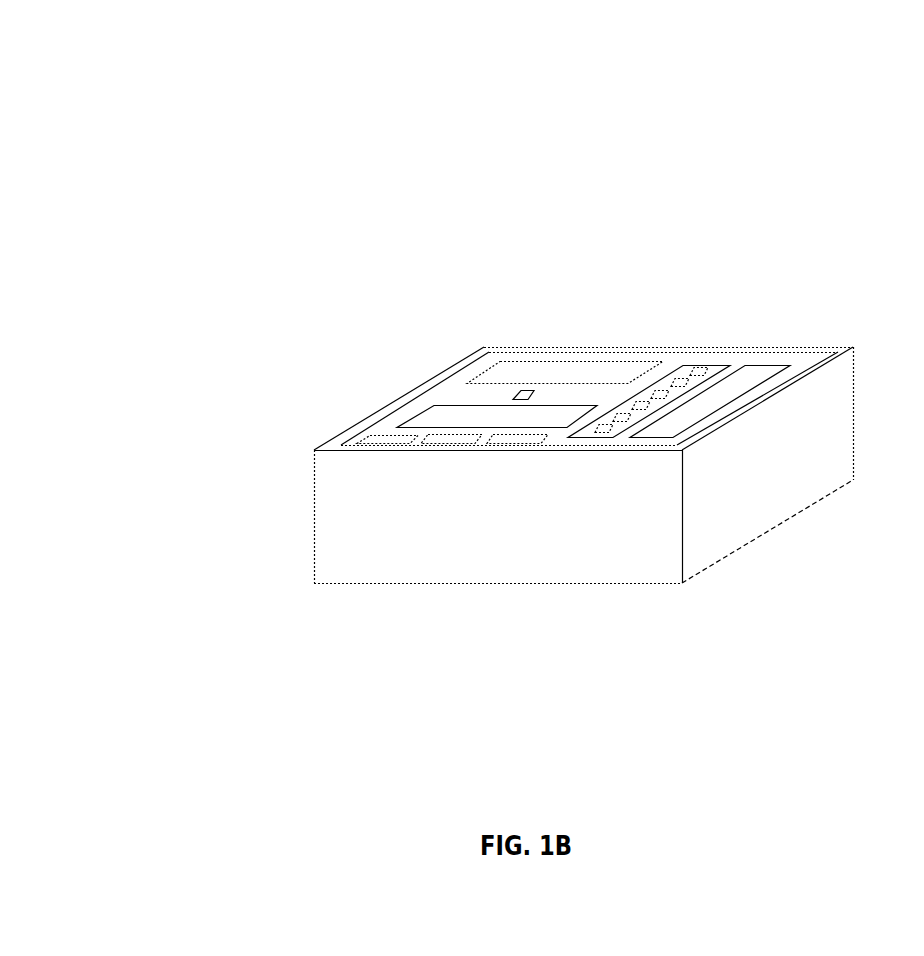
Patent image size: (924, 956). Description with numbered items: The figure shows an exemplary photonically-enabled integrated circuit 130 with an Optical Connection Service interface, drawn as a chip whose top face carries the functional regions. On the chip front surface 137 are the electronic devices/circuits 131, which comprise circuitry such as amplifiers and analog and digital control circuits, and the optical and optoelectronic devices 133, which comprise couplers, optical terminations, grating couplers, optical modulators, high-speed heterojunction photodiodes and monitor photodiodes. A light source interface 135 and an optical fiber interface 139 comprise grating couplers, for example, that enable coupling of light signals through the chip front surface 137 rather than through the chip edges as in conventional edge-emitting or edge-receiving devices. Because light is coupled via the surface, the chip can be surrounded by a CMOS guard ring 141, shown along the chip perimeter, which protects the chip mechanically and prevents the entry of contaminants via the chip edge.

The photonically-enabled integrated circuit 130 is at (170, 91).
The electronic devices/circuits 131 is at (518, 440).
The optical and optoelectronic devices 133 is at (561, 382).
The light source interface 135 is at (513, 398).
The chip front surface 137 is at (618, 353).
The optical fiber interface 139 is at (705, 363).
The CMOS guard ring 141 is at (838, 352).